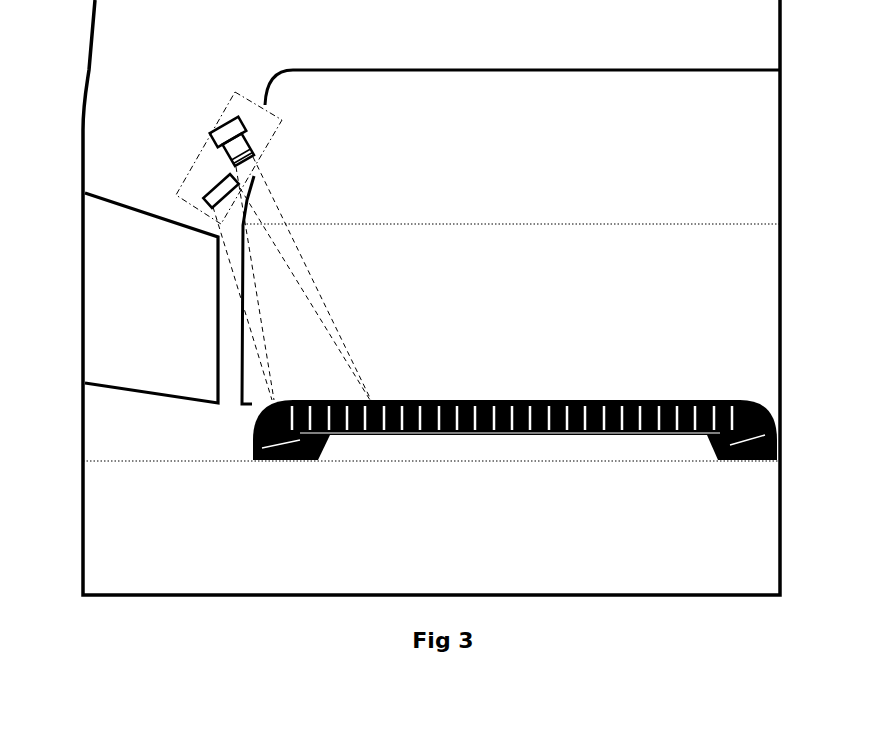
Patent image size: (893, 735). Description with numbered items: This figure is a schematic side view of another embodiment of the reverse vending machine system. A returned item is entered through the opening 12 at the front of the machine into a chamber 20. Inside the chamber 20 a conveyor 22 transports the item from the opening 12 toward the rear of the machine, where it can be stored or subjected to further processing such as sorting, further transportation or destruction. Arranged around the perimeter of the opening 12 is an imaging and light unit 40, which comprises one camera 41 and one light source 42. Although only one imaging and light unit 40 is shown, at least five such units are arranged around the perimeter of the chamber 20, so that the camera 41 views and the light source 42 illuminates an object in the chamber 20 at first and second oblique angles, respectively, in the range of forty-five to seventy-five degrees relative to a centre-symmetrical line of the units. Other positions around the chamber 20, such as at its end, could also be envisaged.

The opening 12 is at (103, 268).
The chamber 20 is at (452, 289).
The conveyor 22 is at (577, 398).
The imaging and light unit 40 is at (210, 162).
The camera 41 is at (240, 110).
The light source 42 is at (205, 195).